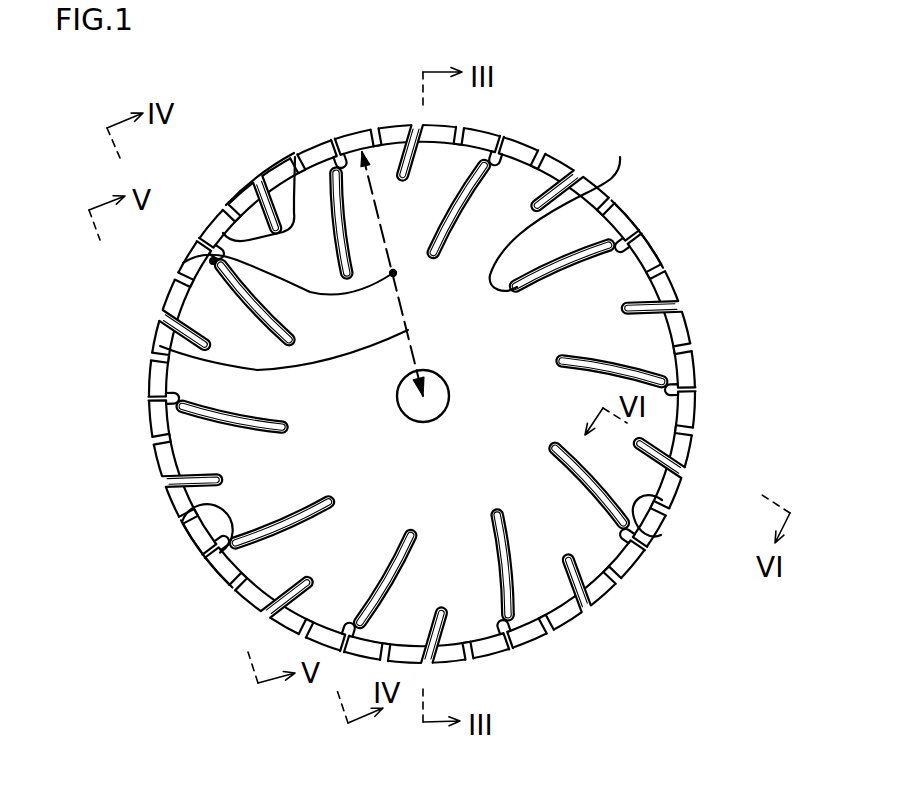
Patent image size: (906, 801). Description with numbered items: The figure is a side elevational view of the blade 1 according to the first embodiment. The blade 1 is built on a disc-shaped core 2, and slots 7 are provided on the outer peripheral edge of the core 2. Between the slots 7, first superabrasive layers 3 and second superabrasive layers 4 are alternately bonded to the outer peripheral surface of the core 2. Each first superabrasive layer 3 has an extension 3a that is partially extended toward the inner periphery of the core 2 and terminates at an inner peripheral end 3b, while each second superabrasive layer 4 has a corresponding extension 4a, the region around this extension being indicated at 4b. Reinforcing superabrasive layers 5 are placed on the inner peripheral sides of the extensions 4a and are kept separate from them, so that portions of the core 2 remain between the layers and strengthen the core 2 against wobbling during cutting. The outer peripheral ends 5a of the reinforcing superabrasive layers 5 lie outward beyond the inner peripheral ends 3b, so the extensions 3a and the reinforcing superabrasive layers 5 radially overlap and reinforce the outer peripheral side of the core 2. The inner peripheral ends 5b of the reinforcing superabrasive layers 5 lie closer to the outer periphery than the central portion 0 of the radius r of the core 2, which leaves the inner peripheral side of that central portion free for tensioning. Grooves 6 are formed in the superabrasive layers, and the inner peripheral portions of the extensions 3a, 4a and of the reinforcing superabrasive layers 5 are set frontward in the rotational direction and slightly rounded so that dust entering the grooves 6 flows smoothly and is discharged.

The blade 1 is at (415, 391).
The core 2 is at (617, 280).
The first superabrasive layer 3 is at (250, 192).
The extension 3a is at (224, 228).
The inner peripheral end 3b is at (283, 195).
The second superabrasive layer 4 is at (190, 538).
The extension 4a is at (222, 555).
The rounded root portion 4b is at (170, 510).
The reinforcing superabrasive layer 5 is at (570, 247).
The outer peripheral end 5a is at (622, 226).
The inner peripheral end 5b is at (567, 208).
The groove 6 is at (168, 401).
The slot 7 is at (660, 536).
The central portion 0 is at (213, 261).
The radius r is at (160, 346).